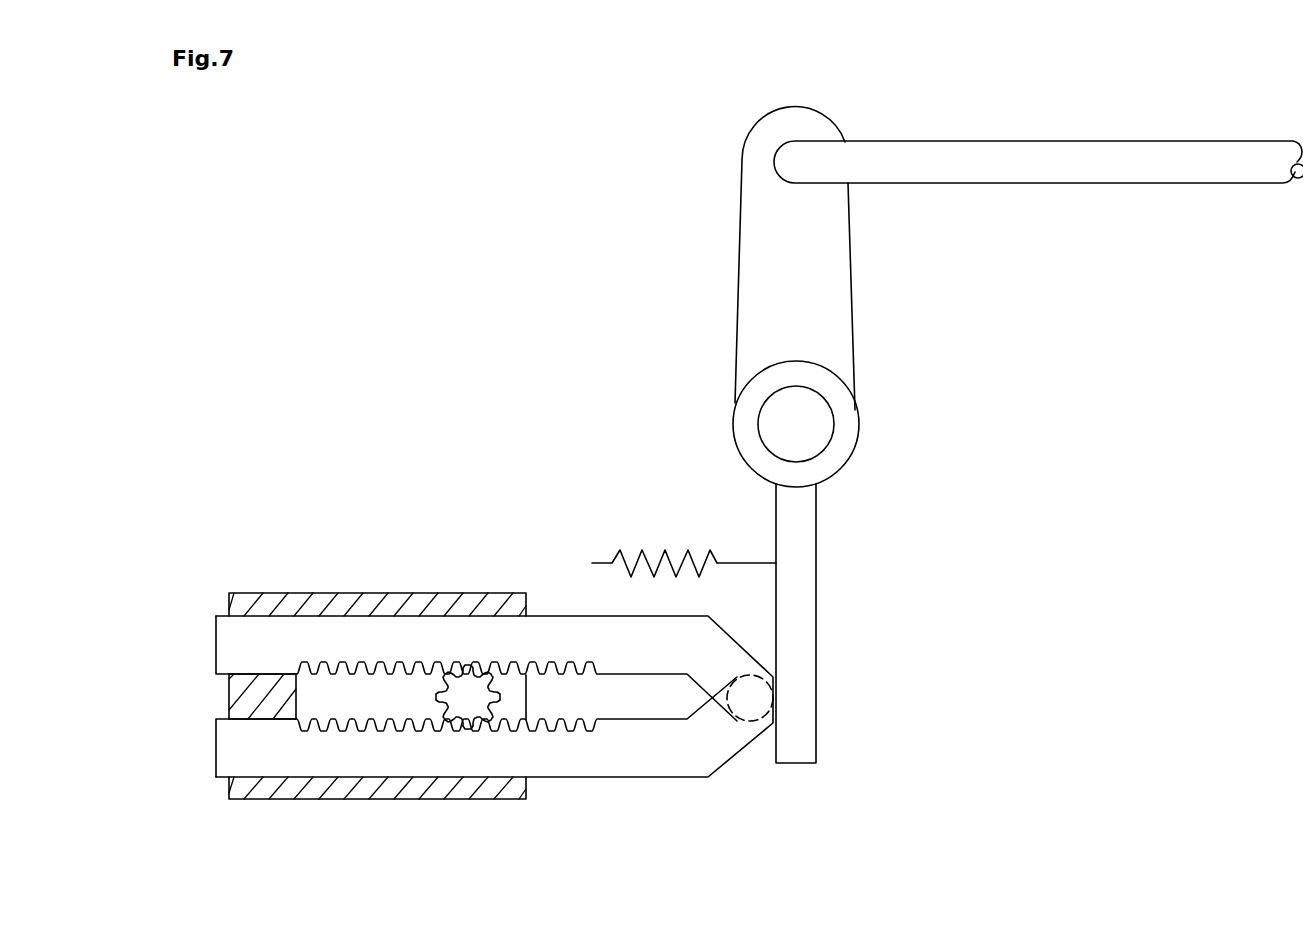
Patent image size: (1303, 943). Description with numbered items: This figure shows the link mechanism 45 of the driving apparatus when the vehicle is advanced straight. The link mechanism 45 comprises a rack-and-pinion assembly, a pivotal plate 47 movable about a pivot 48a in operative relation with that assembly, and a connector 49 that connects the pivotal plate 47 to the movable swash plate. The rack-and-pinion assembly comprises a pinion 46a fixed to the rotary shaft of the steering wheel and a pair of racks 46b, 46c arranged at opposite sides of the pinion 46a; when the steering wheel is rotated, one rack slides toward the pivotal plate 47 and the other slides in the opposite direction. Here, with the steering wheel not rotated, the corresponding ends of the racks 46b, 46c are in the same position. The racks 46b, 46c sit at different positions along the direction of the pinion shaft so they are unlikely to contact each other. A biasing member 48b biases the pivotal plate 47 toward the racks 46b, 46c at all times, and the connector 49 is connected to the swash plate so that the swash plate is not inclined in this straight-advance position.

The link mechanism 45 is at (617, 350).
The pinion 46a is at (470, 700).
The rack 46b is at (242, 643).
The rack 46c is at (253, 758).
The pivotal plate 47 is at (800, 652).
The pivot 48a is at (810, 432).
The biasing member 48b is at (648, 550).
The connector 49 is at (1095, 162).